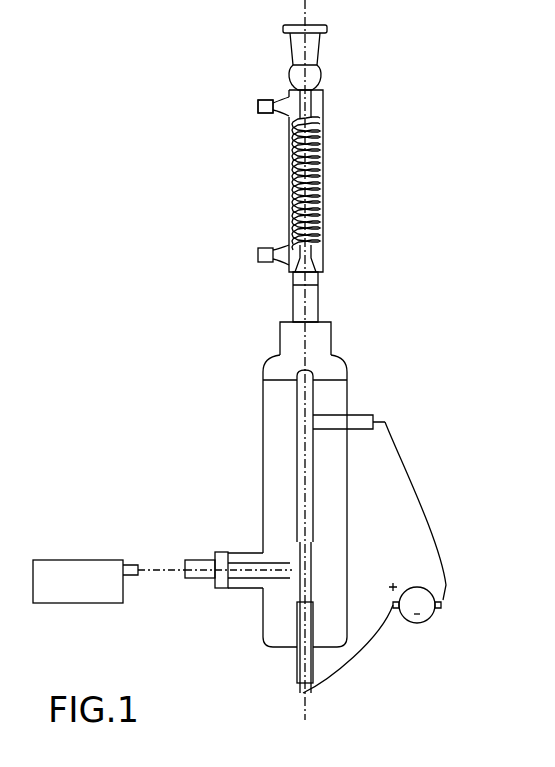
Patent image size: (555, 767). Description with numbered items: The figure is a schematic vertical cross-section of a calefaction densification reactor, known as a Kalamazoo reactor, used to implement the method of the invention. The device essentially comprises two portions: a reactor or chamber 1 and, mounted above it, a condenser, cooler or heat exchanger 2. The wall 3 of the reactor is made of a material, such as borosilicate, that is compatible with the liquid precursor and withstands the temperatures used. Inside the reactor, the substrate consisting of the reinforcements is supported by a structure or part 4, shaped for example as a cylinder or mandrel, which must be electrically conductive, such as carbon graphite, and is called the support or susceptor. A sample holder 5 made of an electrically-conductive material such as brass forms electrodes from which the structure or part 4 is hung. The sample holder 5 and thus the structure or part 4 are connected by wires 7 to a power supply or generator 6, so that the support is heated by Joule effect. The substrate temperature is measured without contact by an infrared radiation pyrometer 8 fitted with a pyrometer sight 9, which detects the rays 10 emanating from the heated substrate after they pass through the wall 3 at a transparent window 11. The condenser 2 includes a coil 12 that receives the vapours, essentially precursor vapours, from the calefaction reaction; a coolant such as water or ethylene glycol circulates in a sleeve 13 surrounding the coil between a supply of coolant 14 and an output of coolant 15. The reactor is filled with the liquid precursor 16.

The reactor 1 is at (191, 494).
The condenser 2 is at (324, 160).
The wall 3 is at (347, 368).
The structure or part 4 is at (308, 550).
The sample holder 5 is at (300, 441).
The power supply 6 is at (430, 620).
The wires 7 is at (430, 503).
The infrared radiation pyrometer 8 is at (48, 558).
The pyrometer sight 9 is at (203, 558).
The rays 10 is at (157, 568).
The transparent window 11 is at (226, 590).
The coil 12 is at (285, 179).
The sleeve 13 is at (325, 103).
The supply of coolant 14 is at (258, 254).
The output of coolant 15 is at (258, 105).
The liquid precursor 16 is at (332, 462).